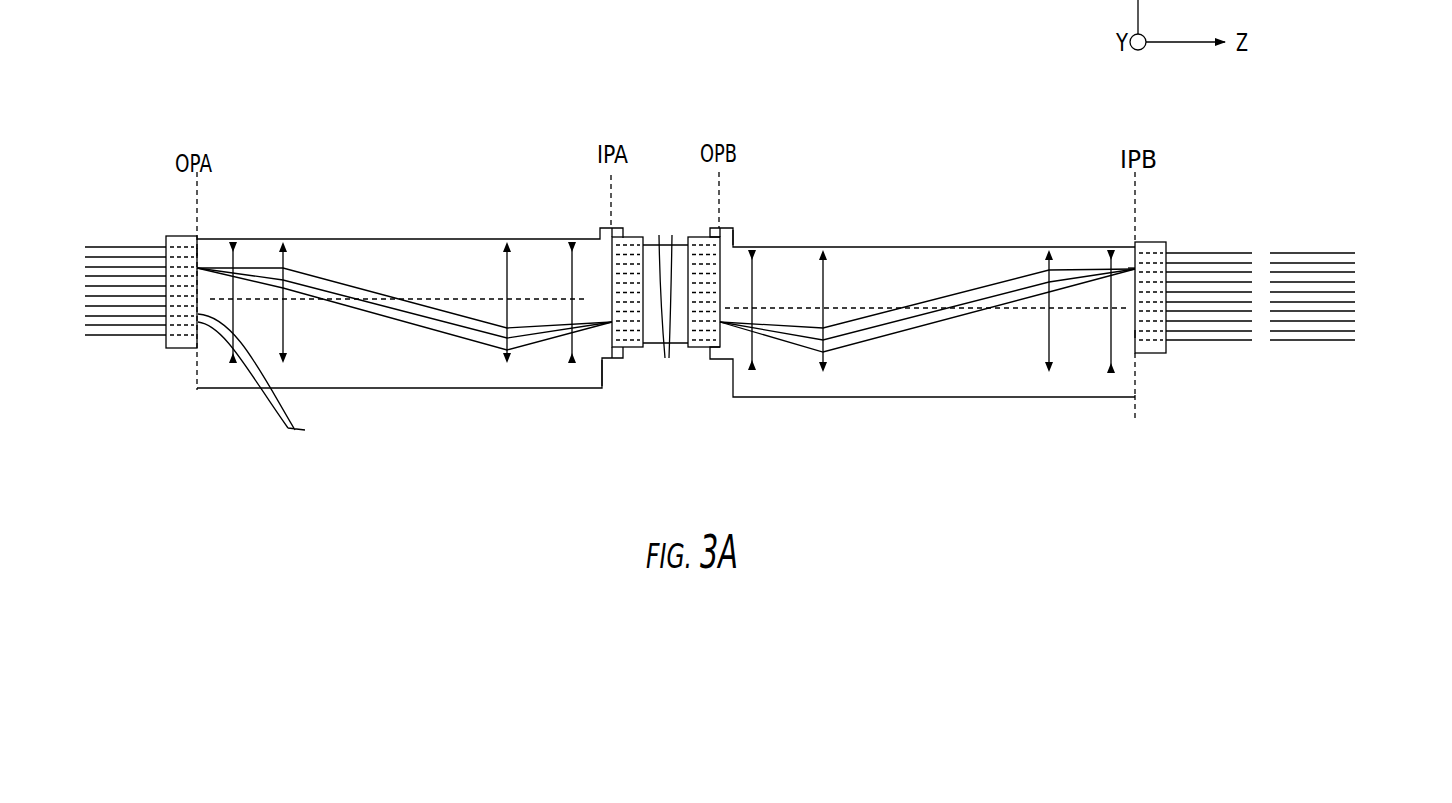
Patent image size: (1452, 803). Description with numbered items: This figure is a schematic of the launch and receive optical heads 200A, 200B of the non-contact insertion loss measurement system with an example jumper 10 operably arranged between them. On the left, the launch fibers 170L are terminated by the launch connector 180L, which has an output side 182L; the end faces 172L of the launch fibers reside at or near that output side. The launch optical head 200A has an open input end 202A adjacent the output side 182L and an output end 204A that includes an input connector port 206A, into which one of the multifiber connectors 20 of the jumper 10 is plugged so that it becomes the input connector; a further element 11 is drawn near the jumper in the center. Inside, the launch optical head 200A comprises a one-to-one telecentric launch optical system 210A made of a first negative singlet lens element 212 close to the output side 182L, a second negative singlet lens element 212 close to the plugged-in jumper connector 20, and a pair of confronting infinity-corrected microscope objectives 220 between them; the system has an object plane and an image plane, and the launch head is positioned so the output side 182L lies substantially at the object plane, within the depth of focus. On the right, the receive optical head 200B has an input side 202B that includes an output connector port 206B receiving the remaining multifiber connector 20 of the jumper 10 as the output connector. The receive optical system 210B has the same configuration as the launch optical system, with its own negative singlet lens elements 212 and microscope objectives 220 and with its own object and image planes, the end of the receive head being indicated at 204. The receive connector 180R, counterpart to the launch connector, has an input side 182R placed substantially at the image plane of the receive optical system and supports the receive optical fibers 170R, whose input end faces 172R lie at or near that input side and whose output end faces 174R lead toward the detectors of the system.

The jumper 10 is at (665, 172).
The optical element 11 is at (679, 347).
The multifiber connector 20 is at (634, 238).
The launch fibers 170L is at (147, 330).
The receive optical fibers 170R is at (1200, 333).
The end faces 172L is at (272, 379).
The input end faces 172R is at (1134, 268).
The output end faces 174R is at (1352, 340).
The launch connector 180L is at (165, 349).
The receive connector 180R is at (1143, 354).
The output side 182L is at (198, 253).
The input side 182R is at (1133, 335).
The launch optical head 200A is at (313, 142).
The receive optical head 200B is at (1000, 155).
The input end 202A is at (198, 390).
The input side 202B is at (730, 393).
The housing section 204 is at (1127, 427).
The output end 204A is at (604, 362).
The input connector port 206A is at (621, 360).
The output connector port 206B is at (733, 228).
The launch optical system 210A is at (418, 206).
The receive optical system 210B is at (1020, 205).
The negative singlet lens element 212 is at (236, 250).
The infinity-corrected microscope objective 220 is at (505, 282).